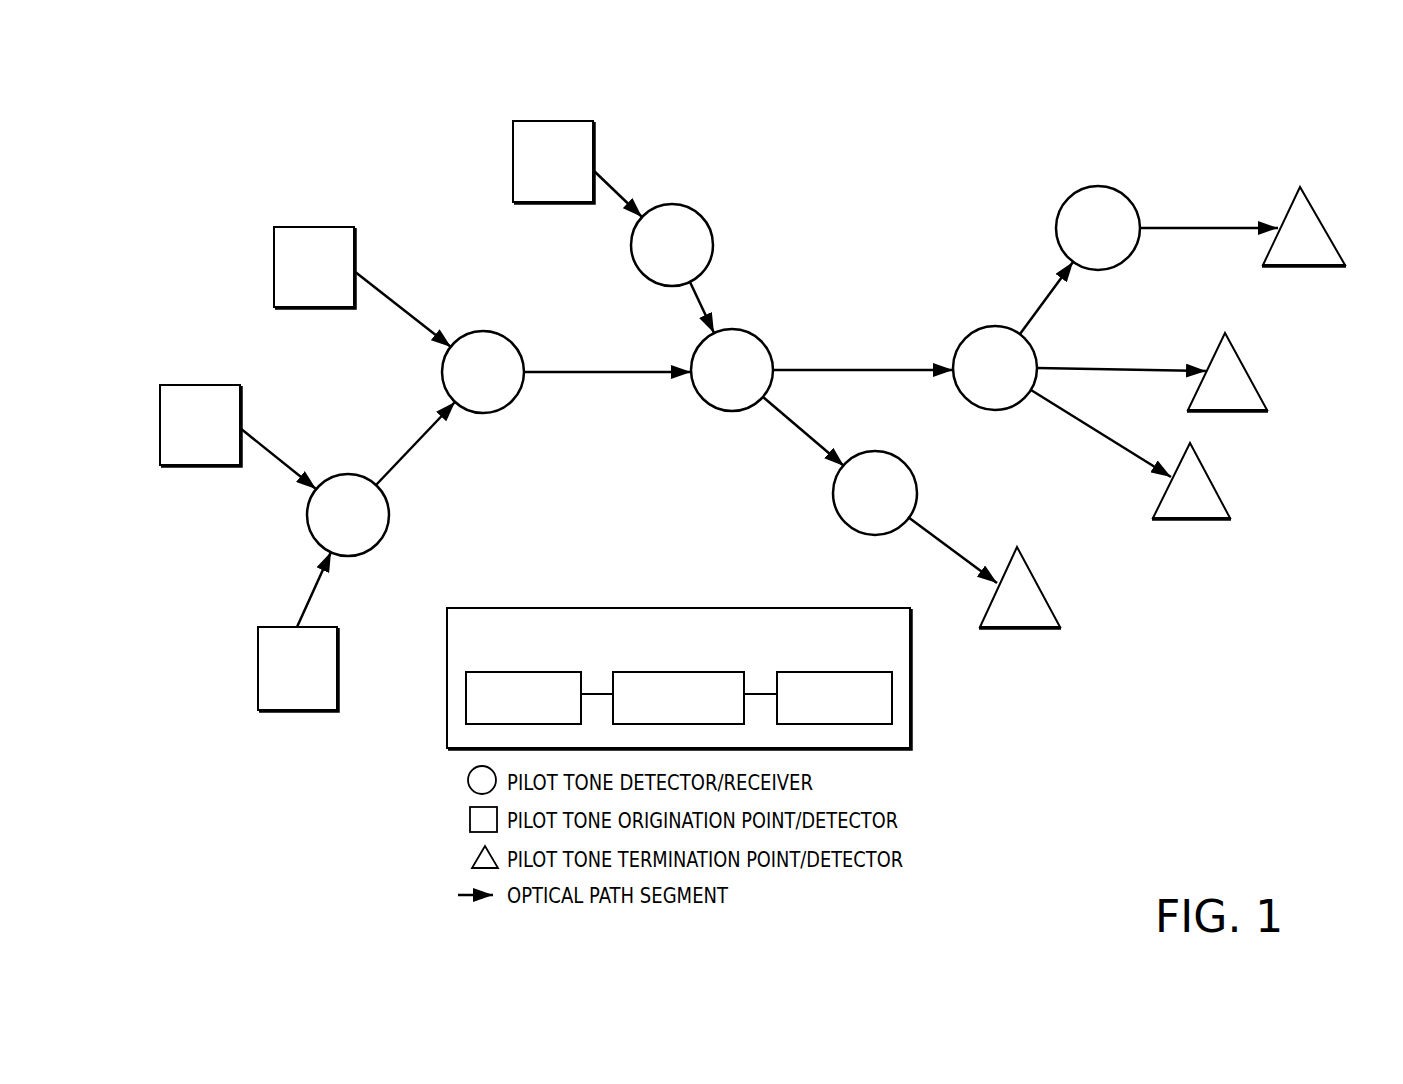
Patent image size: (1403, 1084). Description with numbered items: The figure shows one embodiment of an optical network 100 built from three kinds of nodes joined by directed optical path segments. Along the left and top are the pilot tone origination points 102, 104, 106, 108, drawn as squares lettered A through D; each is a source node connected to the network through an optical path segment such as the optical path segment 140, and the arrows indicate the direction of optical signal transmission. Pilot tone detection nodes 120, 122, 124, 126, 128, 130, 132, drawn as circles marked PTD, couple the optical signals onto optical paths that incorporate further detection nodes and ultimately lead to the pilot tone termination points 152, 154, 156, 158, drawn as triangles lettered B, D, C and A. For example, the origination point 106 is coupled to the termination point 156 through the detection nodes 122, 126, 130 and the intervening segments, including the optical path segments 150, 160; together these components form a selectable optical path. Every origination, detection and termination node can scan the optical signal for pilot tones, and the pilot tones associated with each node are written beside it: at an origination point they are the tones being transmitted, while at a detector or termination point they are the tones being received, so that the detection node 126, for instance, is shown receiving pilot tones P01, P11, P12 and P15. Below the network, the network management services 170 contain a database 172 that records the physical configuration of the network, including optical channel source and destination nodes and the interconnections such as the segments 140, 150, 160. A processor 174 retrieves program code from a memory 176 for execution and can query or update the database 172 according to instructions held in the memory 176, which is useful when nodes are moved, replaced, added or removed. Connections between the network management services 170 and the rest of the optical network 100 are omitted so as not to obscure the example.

The optical network 100 is at (868, 188).
The pilot tone origination point 102 is at (273, 627).
The pilot tone origination point 104 is at (218, 385).
The pilot tone origination point 106 is at (352, 227).
The pilot tone origination point 108 is at (580, 121).
The pilot tone detection node 120 is at (348, 515).
The pilot tone detection node 122 is at (483, 372).
The pilot tone detection node 124 is at (672, 245).
The pilot tone detection node 126 is at (732, 370).
The pilot tone detection node 128 is at (875, 493).
The pilot tone detection node 130 is at (995, 368).
The pilot tone detection node 132 is at (1098, 228).
The optical path segment 140 is at (408, 440).
The optical path segment 150 is at (612, 370).
The optical path segment 160 is at (852, 368).
The pilot tone termination point 152 is at (1035, 575).
The pilot tone termination point 154 is at (1207, 466).
The pilot tone termination point 156 is at (1247, 360).
The pilot tone termination point 158 is at (1317, 266).
The network management services 170 is at (705, 651).
The database 172 is at (892, 694).
The processor 174 is at (678, 698).
The memory 176 is at (523, 698).